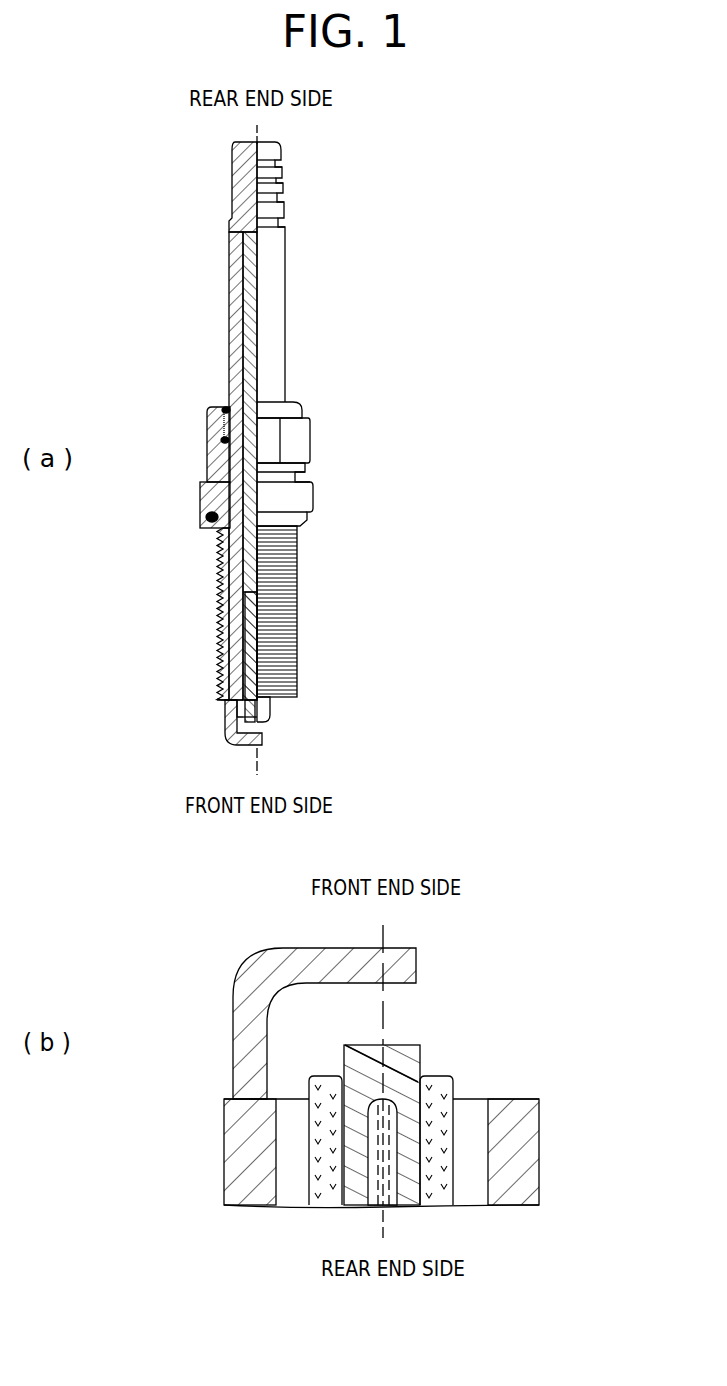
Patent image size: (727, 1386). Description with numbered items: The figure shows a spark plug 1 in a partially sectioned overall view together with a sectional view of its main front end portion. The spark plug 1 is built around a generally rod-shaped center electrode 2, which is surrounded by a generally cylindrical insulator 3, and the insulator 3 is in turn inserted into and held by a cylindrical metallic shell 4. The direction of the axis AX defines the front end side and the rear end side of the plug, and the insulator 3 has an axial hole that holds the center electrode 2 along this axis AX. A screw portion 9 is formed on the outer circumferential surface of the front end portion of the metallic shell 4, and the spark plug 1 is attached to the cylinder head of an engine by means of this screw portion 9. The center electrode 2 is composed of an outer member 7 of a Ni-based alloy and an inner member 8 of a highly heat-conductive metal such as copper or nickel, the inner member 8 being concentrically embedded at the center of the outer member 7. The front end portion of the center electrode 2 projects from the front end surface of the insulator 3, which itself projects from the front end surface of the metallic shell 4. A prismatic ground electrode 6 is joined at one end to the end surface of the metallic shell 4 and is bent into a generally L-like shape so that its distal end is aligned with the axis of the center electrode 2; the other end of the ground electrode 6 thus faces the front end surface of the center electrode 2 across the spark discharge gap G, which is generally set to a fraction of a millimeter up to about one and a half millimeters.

The spark plug 1 is at (334, 376).
The center electrode 2 is at (267, 721).
The insulator 3 is at (223, 657).
The metallic shell 4 is at (223, 673).
The ground electrode 6 is at (237, 746).
The outer member 7 is at (250, 718).
The inner member 8 is at (240, 705).
The screw portion 9 is at (294, 607).
The spark discharge gap G is at (264, 731).
The axis AX is at (260, 135).